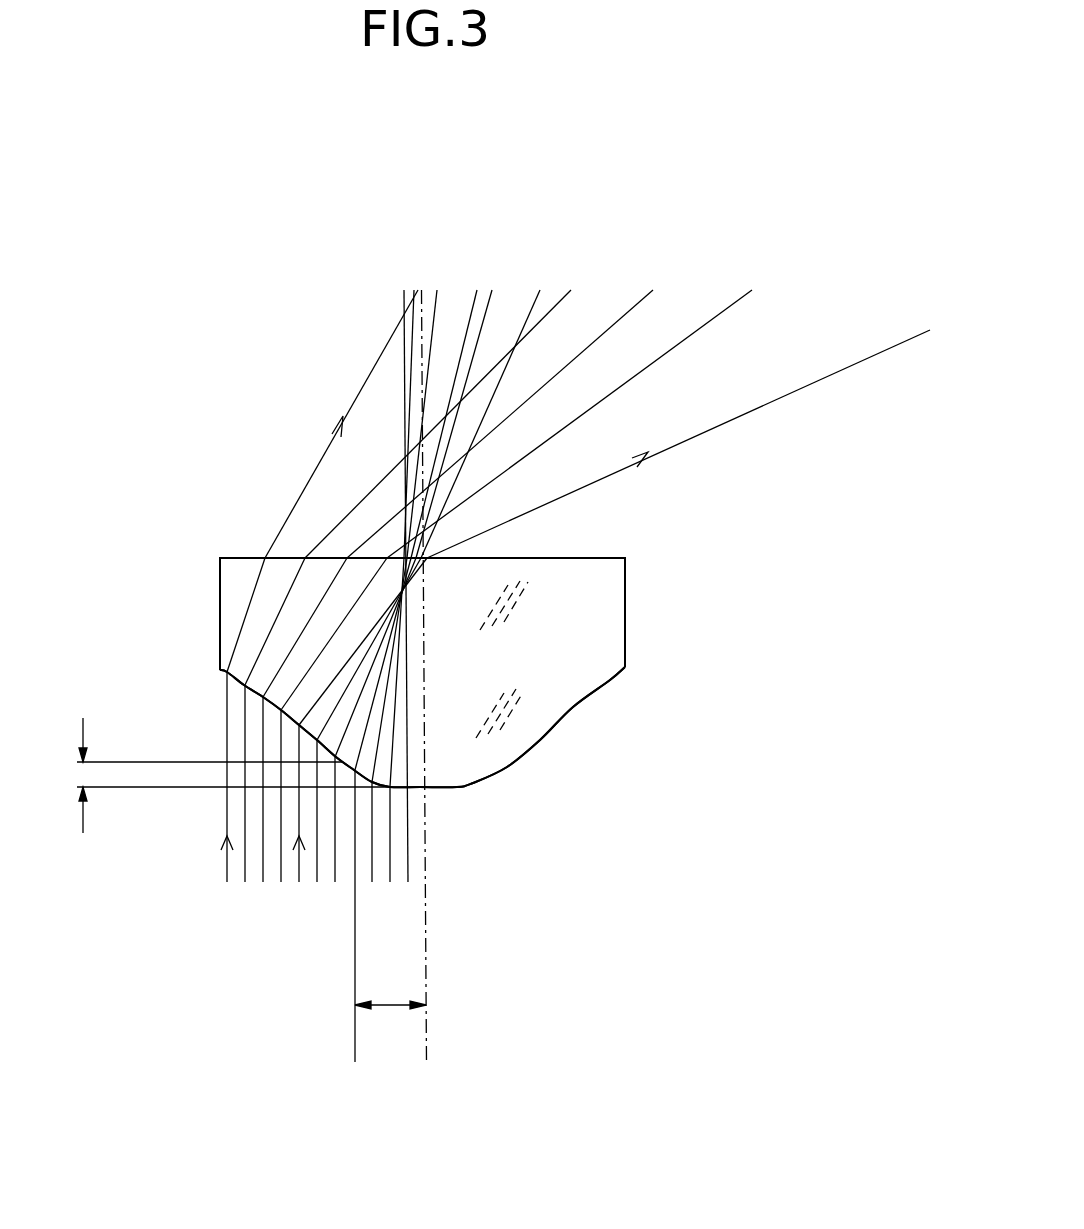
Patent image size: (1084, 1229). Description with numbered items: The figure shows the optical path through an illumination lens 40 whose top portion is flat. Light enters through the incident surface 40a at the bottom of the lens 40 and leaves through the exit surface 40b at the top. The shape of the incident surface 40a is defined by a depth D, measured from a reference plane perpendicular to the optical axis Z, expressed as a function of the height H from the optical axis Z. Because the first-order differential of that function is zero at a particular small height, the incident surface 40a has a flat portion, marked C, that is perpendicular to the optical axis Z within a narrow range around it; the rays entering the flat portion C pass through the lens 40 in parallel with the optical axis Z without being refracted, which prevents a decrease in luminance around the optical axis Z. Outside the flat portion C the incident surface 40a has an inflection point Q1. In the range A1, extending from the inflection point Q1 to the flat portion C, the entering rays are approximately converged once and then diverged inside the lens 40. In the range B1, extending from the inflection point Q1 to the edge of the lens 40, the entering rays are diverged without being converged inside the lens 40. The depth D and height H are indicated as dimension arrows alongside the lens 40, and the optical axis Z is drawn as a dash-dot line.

The lens 40 is at (607, 642).
The incident surface 40a is at (540, 740).
The exit surface 40b is at (590, 558).
The inflection point Q1 is at (300, 732).
The depth D is at (233, 797).
The height H is at (390, 1027).
The optical axis Z is at (426, 953).
The range from the inflection point to the lens edge B1 is at (300, 884).
The range from the inflection point to the flat portion A1 is at (393, 884).
The flat portion C is at (423, 884).